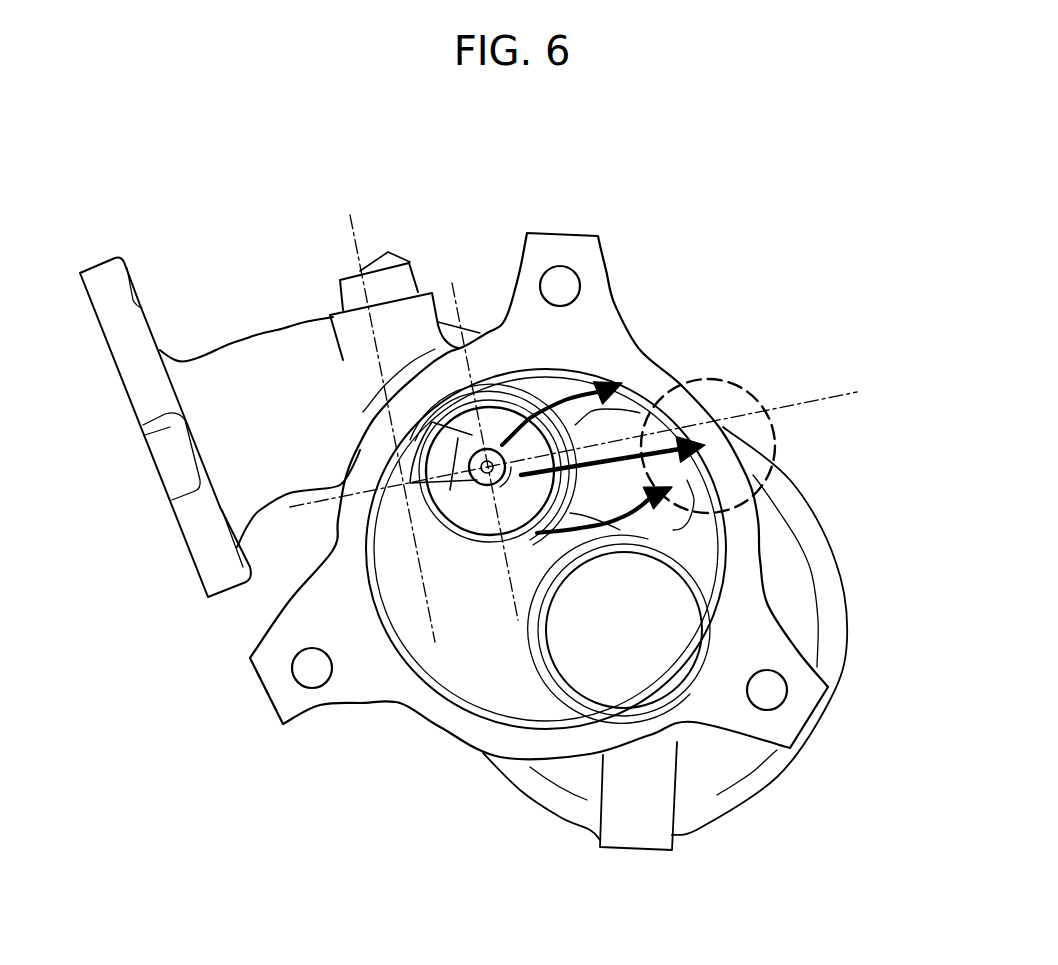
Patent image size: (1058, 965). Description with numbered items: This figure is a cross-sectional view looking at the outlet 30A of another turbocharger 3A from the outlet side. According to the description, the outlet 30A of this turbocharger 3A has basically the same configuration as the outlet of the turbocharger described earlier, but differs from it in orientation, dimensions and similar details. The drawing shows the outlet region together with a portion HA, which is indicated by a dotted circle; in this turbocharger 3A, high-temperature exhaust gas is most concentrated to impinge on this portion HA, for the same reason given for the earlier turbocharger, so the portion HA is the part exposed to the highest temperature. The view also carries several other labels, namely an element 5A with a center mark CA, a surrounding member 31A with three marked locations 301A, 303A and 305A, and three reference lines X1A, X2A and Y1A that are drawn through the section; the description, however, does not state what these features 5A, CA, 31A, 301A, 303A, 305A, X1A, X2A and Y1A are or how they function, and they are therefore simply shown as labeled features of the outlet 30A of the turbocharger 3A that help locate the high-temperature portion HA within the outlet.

The turbocharger 3A is at (505, 489).
The impeller 5A is at (518, 412).
The impeller center axis CA is at (487, 467).
The outlet 30A is at (633, 337).
The flange 31A is at (590, 323).
The bolt hole 301A is at (562, 266).
The bolt hole 303A is at (785, 693).
The bolt hole 305A is at (293, 674).
The portion HA is at (721, 384).
The first axis X1A is at (348, 232).
The second axis X2A is at (517, 602).
The third axis Y1A is at (837, 394).